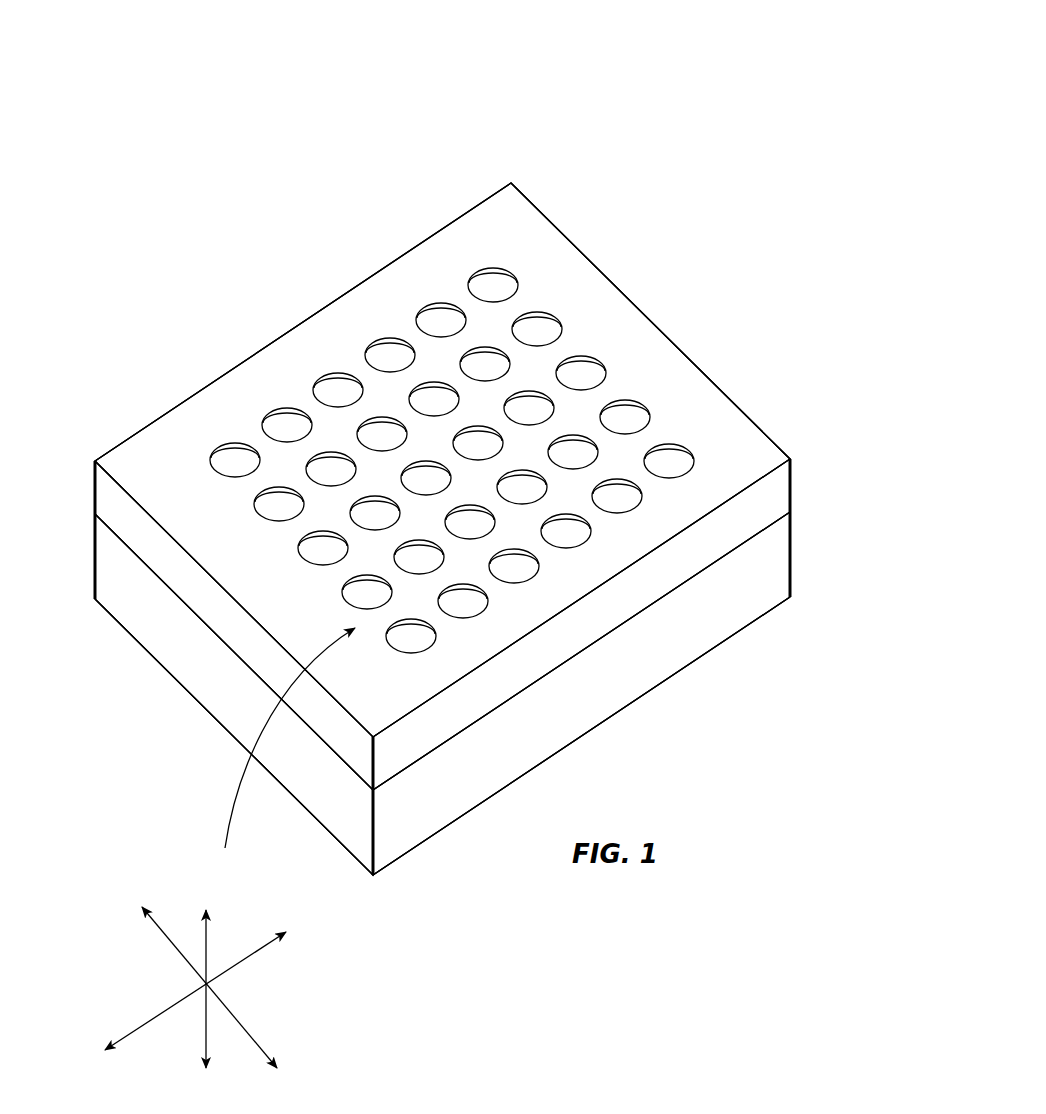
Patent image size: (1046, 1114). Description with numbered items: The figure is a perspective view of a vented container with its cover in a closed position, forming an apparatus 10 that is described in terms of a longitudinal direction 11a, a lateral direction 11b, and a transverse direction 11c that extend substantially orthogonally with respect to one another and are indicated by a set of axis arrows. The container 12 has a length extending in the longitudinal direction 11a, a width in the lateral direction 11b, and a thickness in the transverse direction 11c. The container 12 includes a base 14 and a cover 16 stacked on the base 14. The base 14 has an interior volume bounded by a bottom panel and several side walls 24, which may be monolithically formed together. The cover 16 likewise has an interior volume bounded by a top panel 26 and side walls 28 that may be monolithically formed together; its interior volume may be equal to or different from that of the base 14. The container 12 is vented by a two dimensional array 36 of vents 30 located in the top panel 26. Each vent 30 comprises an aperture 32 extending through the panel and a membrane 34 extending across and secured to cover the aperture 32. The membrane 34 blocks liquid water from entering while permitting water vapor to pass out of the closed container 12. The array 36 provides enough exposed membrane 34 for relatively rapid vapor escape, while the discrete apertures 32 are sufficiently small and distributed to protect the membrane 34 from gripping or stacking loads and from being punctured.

The apparatus 10 is at (633, 120).
The container 12 is at (733, 355).
The base 14 is at (795, 565).
The cover 16 is at (795, 497).
The side walls 24 is at (212, 688).
The top panel 26 is at (163, 447).
The side walls 28 is at (165, 562).
The vents 30 is at (562, 308).
The apertures 32 is at (433, 300).
The membrane 34 is at (382, 353).
The array 36 is at (281, 752).
The longitudinal direction 11a is at (245, 960).
The lateral direction 11b is at (182, 957).
The transverse direction 11c is at (208, 950).